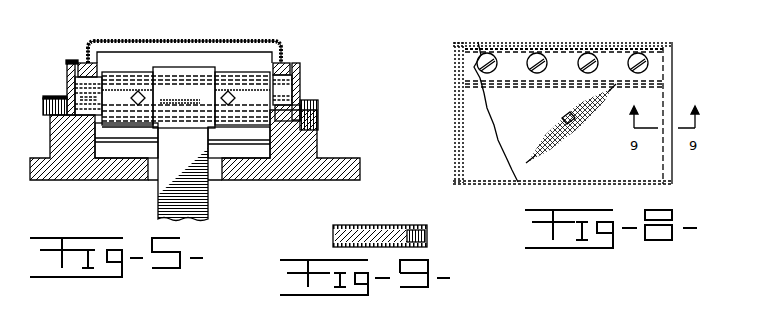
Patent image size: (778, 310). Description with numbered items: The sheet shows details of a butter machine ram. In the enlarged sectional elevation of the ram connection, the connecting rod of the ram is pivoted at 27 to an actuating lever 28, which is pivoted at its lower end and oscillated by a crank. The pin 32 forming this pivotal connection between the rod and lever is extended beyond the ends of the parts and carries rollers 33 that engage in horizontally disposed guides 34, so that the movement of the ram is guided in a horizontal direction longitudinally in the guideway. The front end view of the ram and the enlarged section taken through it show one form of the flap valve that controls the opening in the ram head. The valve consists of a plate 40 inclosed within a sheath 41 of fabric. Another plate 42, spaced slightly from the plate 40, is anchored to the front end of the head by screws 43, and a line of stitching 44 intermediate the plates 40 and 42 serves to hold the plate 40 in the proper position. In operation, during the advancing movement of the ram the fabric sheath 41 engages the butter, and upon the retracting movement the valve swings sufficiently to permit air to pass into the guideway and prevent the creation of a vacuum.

In FIG. 5, the pivot 27 is at (242, 76).
In FIG. 5, the actuating lever 28 is at (170, 193).
In FIG. 5, the pin 32 is at (301, 78).
In FIG. 5, the rollers 33 is at (298, 95).
In FIG. 5, the guides 34 is at (290, 66).
In FIG. 8, the plate 40 is at (487, 170).
In FIG. 9, the plate 40 is at (370, 238).
In FIG. 8, the sheath 41 is at (542, 170).
In FIG. 9, the sheath 41 is at (407, 232).
In FIG. 8, the plate 42 is at (468, 68).
In FIG. 8, the screws 43 is at (537, 72).
In FIG. 8, the line of stitching 44 is at (660, 82).